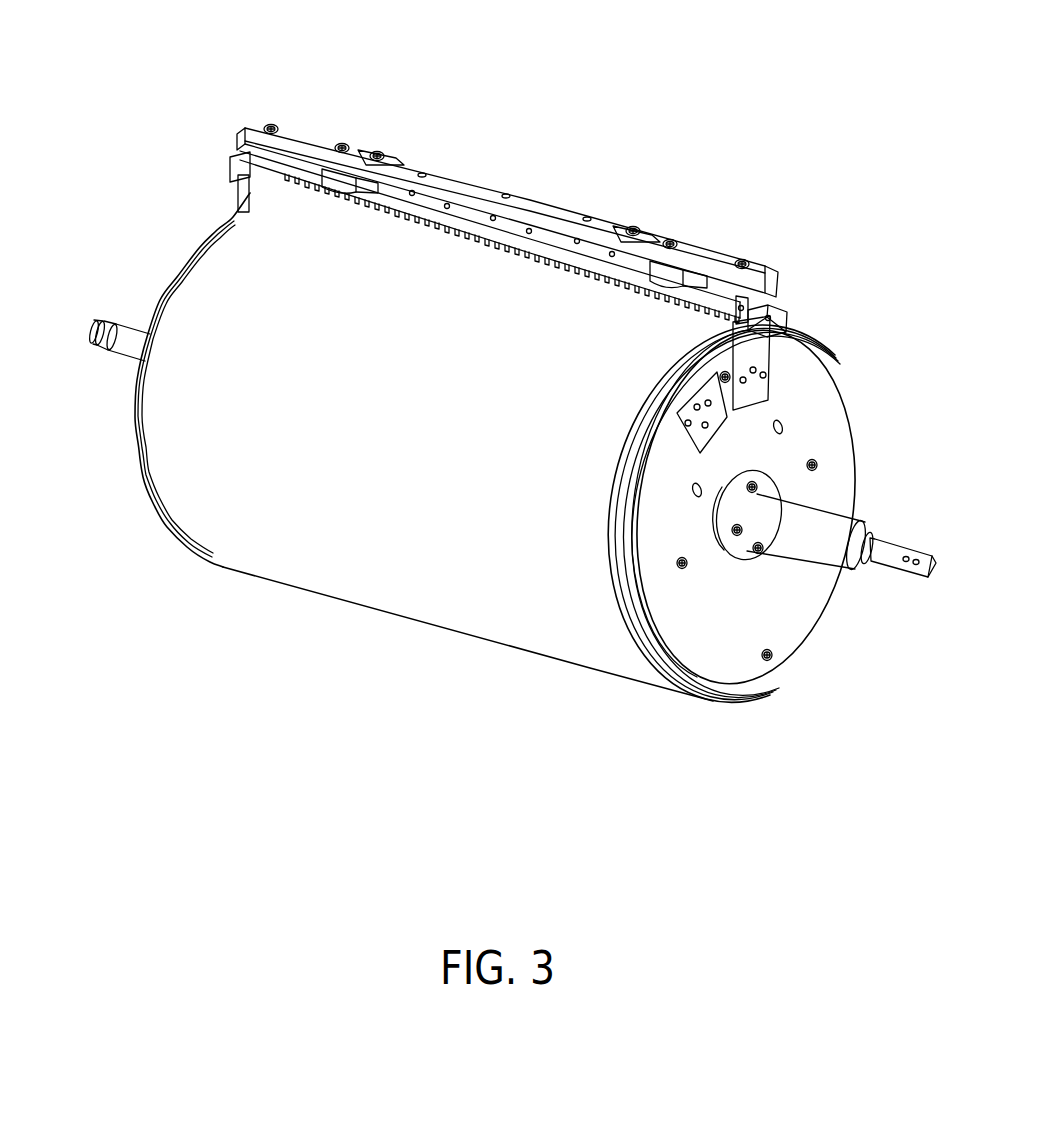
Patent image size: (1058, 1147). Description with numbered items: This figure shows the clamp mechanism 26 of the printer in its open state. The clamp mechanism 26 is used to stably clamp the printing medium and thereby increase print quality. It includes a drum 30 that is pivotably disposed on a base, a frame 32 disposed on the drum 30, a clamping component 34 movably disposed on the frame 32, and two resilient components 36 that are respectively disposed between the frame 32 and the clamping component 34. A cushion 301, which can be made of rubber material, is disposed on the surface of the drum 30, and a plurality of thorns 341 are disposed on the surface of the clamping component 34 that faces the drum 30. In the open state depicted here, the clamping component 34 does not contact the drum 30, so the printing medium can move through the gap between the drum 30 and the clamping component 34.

The clamp mechanism 26 is at (788, 74).
The drum 30 is at (778, 613).
The cushion 301 is at (663, 673).
The frame 32 is at (695, 252).
The clamping component 34 is at (432, 225).
The thorns 341 is at (597, 285).
The resilient components 36 is at (336, 178).